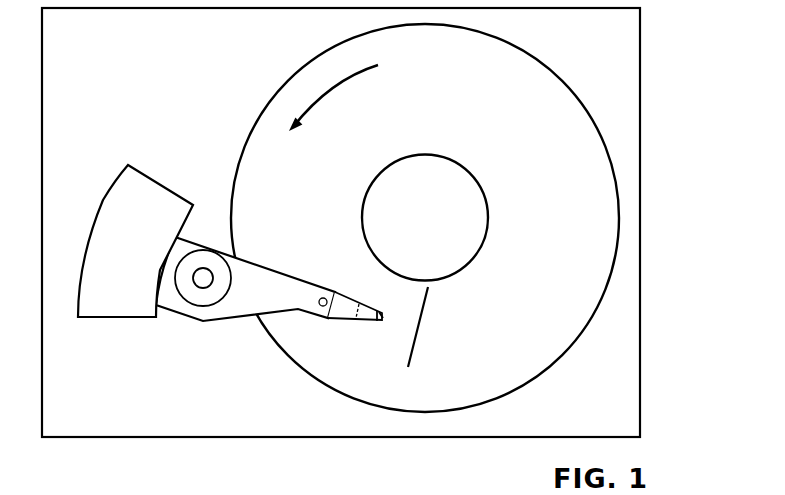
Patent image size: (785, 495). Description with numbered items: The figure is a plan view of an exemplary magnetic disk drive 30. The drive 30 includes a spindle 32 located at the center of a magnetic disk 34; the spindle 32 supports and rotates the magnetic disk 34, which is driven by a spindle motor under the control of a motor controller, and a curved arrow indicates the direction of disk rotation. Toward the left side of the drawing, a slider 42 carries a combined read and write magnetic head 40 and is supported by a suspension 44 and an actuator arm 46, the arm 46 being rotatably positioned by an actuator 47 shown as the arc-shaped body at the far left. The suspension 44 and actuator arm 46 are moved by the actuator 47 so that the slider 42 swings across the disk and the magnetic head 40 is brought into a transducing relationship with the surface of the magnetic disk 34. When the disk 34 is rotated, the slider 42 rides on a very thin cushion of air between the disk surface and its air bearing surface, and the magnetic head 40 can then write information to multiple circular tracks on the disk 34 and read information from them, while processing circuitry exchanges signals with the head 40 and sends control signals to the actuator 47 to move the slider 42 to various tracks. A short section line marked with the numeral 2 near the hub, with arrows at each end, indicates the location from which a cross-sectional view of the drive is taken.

The magnetic disk drive 30 is at (661, 45).
The spindle 32 is at (462, 164).
The magnetic disk 34 is at (566, 239).
The magnetic head 40 is at (384, 321).
The slider 42 is at (387, 296).
The suspension 44 is at (344, 318).
The actuator arm 46 is at (287, 278).
The actuator 47 is at (168, 196).
The section line 2- 2 is at (440, 298).